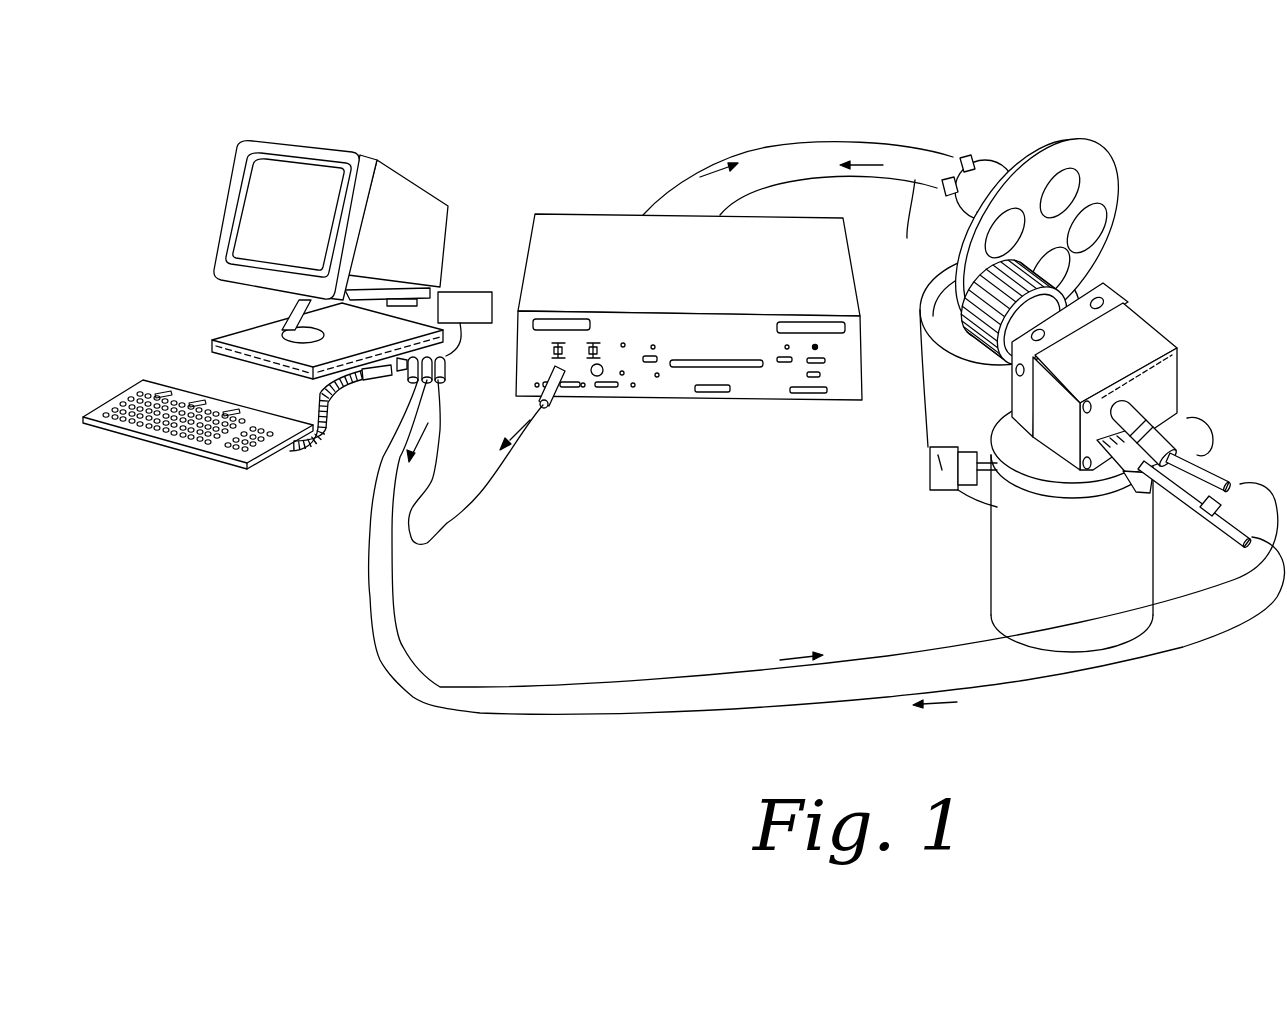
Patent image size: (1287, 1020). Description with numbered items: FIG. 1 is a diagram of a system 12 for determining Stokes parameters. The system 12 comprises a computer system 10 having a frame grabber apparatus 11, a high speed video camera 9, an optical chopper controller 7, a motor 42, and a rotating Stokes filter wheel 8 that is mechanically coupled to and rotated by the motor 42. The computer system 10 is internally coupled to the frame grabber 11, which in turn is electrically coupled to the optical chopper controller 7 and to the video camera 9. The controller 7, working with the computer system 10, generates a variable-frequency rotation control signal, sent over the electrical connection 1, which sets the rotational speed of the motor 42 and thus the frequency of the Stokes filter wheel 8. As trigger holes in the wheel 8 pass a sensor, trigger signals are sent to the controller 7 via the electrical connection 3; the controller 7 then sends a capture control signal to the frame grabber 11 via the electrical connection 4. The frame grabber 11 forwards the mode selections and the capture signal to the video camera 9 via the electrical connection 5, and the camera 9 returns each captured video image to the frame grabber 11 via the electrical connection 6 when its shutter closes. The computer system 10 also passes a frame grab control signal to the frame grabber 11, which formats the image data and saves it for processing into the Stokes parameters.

The electrical connection 1 is at (697, 178).
The electrical connection 3 is at (865, 222).
The electrical connection 4 is at (457, 523).
The electrical connection 5 is at (886, 653).
The electrical connection 6 is at (1000, 690).
The optical chopper controller 7 is at (683, 400).
The rotating Stokes filter wheel 8 is at (1105, 180).
The high speed video camera 9 is at (1157, 328).
The computer system 10 is at (226, 205).
The frame grabber apparatus 11 is at (460, 354).
The system 12 is at (490, 113).
The motor 42 is at (996, 172).